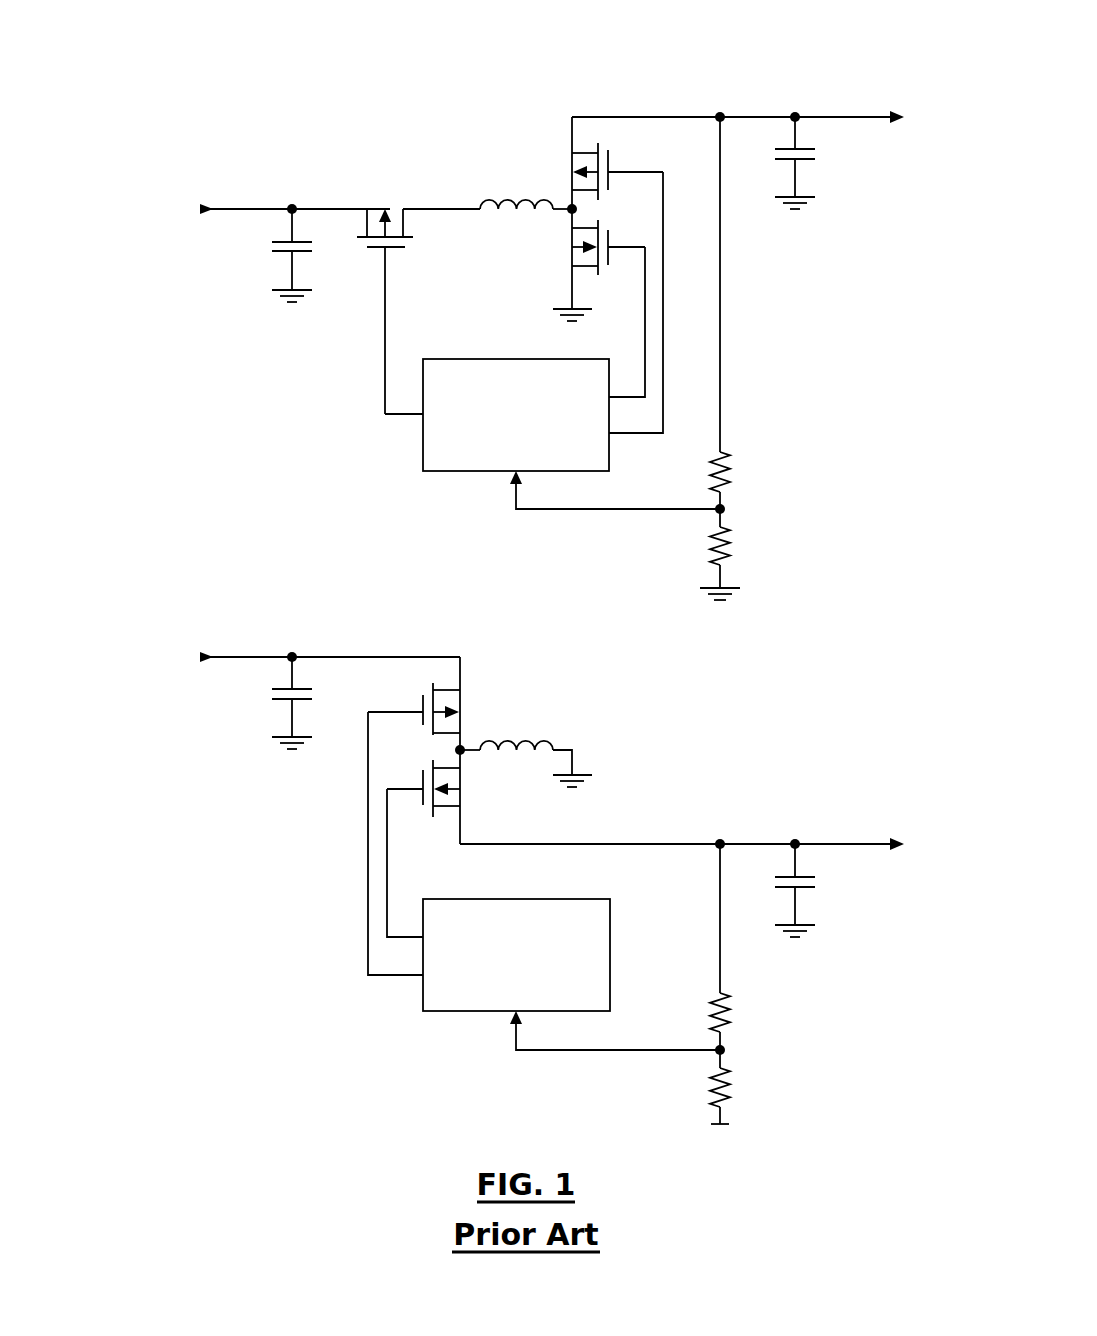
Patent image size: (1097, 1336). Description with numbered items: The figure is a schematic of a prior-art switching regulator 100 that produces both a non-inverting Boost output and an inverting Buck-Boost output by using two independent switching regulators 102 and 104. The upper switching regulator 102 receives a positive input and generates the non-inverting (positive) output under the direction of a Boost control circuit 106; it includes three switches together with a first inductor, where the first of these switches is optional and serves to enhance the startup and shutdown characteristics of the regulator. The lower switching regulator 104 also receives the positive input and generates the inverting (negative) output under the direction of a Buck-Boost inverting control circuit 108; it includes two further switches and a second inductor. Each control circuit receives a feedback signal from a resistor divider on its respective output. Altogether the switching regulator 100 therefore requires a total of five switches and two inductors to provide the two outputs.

The switching regulator 100 is at (492, 57).
The switching regulator 102 is at (157, 168).
The switching regulator 104 is at (157, 616).
The Boost control circuit 106 is at (458, 471).
The Buck-Boost inverting control circuit 108 is at (458, 1011).